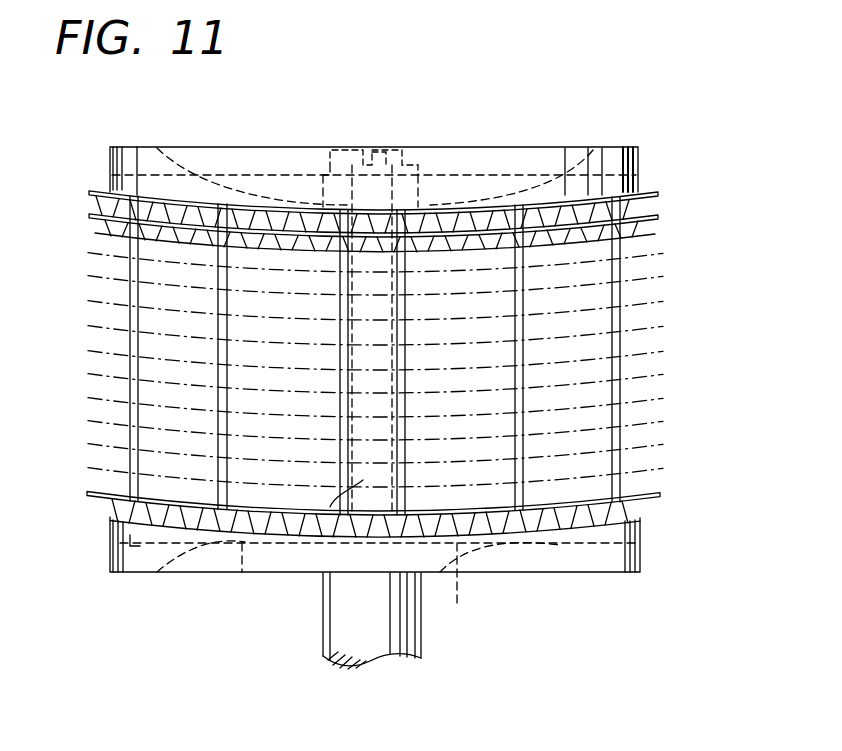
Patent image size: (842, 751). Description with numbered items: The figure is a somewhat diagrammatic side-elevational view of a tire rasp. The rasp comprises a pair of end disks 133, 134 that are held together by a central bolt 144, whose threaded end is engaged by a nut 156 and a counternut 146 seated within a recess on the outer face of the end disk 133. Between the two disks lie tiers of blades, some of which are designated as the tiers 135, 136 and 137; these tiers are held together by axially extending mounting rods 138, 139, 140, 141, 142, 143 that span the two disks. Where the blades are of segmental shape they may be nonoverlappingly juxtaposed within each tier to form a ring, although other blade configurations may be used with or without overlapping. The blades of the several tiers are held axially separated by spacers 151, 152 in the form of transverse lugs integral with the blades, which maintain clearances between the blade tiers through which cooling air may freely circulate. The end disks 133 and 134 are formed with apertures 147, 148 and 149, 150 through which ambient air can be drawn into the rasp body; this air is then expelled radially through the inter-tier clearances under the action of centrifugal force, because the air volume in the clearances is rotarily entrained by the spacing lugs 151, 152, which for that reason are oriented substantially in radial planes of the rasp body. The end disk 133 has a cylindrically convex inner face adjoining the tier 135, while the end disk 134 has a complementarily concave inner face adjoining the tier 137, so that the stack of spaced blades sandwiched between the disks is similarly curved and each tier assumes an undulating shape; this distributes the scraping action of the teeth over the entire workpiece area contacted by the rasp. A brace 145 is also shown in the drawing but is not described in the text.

The end disk 133 is at (617, 148).
The end disk 134 is at (130, 552).
The tier of blades 135 is at (89, 191).
The tier of blades 136 is at (89, 212).
The tier of blades 137 is at (654, 497).
The mounting rod 138 is at (133, 315).
The mounting rod 139 is at (218, 373).
The mounting rod 140 is at (340, 400).
The mounting rod 141 is at (402, 310).
The mounting rod 142 is at (523, 353).
The mounting rod 143 is at (617, 417).
The central bolt 144 is at (460, 650).
The brace 145 is at (330, 507).
The counternut 146 is at (375, 152).
The aperture 147 is at (248, 182).
The aperture 148 is at (495, 178).
The aperture 149 is at (232, 586).
The aperture 150 is at (455, 607).
The spacer 151 is at (630, 203).
The spacer 152 is at (633, 232).
The nut 156 is at (333, 165).